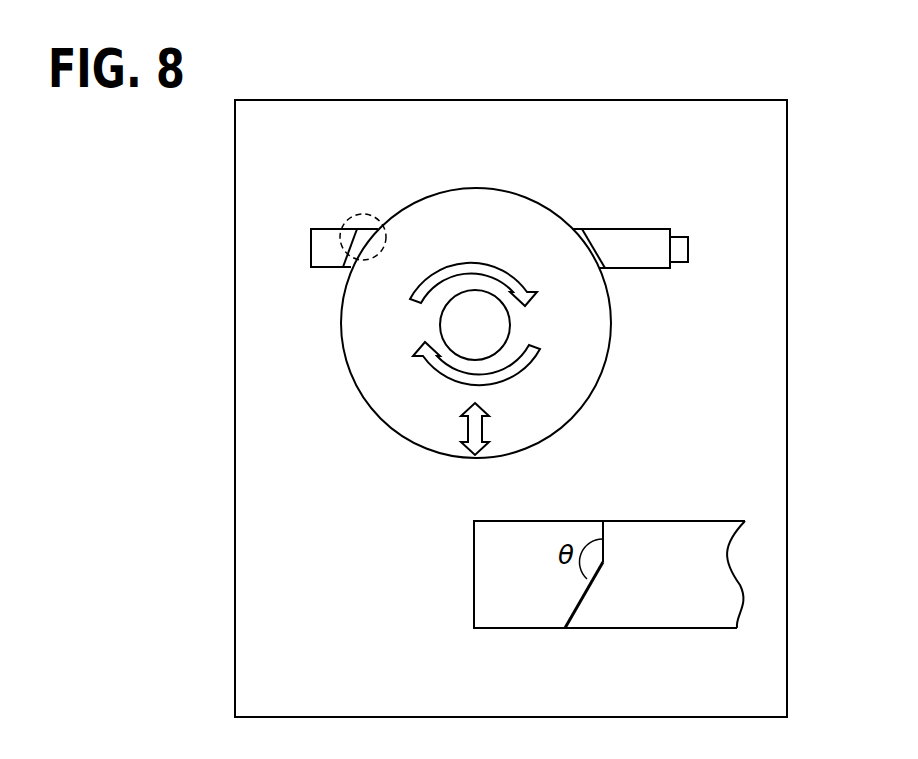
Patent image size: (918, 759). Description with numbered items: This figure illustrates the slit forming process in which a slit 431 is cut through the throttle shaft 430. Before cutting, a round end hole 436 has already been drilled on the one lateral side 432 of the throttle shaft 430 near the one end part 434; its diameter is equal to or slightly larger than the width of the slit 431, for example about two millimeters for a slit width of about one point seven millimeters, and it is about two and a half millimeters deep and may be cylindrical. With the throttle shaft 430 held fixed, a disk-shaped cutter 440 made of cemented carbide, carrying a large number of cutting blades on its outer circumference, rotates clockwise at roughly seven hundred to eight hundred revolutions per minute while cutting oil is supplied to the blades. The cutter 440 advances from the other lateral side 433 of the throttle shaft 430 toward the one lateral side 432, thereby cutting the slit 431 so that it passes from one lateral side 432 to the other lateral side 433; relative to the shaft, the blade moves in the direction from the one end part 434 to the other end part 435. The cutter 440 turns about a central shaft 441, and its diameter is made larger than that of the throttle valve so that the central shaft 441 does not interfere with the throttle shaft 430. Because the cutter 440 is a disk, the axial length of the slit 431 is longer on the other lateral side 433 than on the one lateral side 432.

The throttle shaft 430 is at (650, 243).
The slit 431 is at (578, 243).
The one lateral side 432 is at (619, 229).
The other lateral side 433 is at (628, 268).
The one end part 434 is at (311, 246).
The other end part 435 is at (688, 248).
The round end hole 436 is at (368, 232).
The cutter 440 is at (587, 347).
The central shaft 441 is at (447, 323).